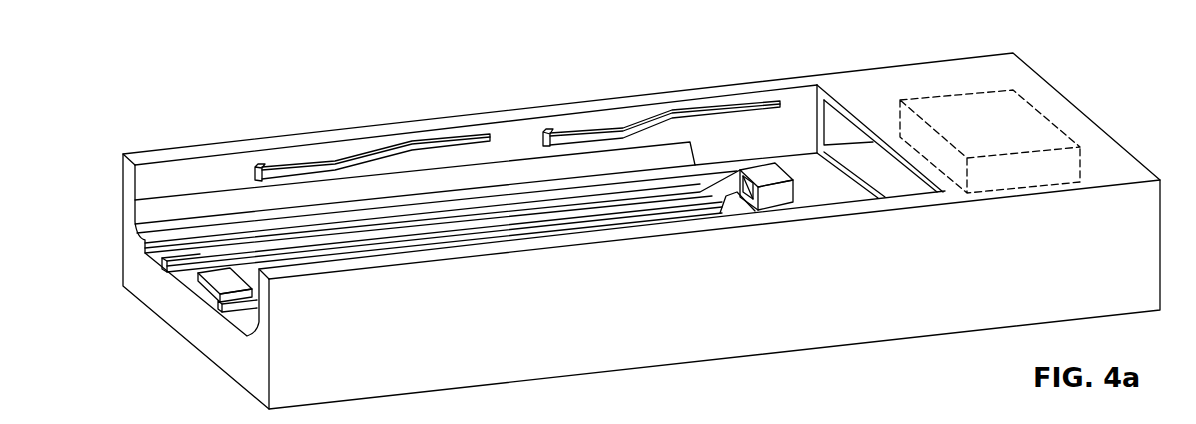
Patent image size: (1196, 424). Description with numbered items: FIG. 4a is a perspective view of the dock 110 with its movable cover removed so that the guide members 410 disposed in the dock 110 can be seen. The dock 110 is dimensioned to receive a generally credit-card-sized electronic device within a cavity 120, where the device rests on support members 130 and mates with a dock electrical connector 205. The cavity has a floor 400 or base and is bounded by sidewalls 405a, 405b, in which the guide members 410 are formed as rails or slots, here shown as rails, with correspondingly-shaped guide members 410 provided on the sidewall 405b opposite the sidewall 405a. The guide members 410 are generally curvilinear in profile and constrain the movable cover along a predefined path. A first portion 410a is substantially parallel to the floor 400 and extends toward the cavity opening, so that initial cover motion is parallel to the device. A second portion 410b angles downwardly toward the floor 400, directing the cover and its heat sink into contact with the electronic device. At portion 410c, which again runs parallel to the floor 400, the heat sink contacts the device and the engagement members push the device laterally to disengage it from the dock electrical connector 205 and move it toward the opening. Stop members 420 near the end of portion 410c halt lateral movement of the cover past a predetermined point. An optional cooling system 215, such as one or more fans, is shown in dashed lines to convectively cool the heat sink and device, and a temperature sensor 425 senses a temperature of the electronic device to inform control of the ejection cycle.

The dock 110 is at (845, 344).
The cavity 120 is at (216, 303).
The support members 130 is at (188, 277).
The dock electrical connector 205 is at (755, 167).
The cooling system 215 is at (1033, 107).
The floor 400 is at (146, 252).
The sidewall 405a is at (185, 172).
The sidewall 405b is at (247, 334).
The guide members 410 is at (381, 142).
The first portion 410a is at (437, 137).
The second portion 410b is at (343, 160).
The portion 410c is at (287, 163).
The stop members 420 is at (257, 165).
The temperature sensor 425 is at (165, 243).